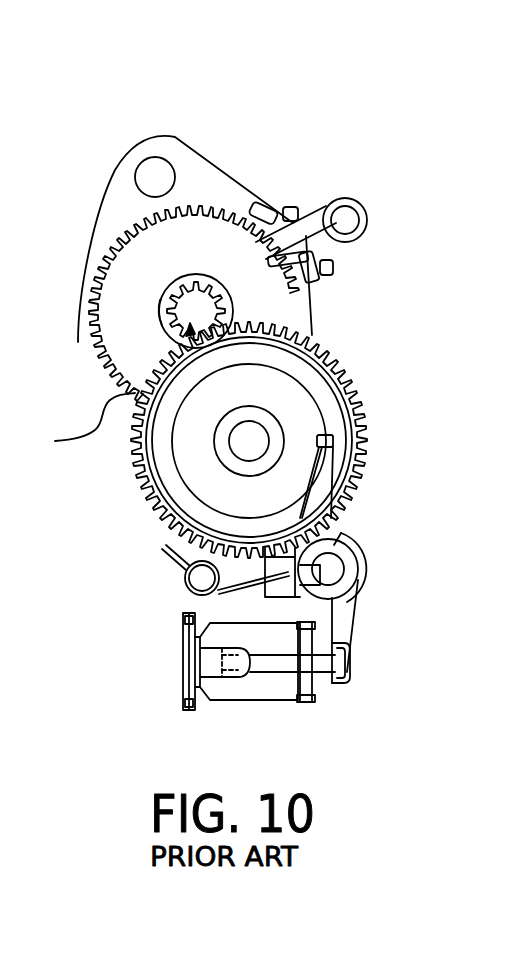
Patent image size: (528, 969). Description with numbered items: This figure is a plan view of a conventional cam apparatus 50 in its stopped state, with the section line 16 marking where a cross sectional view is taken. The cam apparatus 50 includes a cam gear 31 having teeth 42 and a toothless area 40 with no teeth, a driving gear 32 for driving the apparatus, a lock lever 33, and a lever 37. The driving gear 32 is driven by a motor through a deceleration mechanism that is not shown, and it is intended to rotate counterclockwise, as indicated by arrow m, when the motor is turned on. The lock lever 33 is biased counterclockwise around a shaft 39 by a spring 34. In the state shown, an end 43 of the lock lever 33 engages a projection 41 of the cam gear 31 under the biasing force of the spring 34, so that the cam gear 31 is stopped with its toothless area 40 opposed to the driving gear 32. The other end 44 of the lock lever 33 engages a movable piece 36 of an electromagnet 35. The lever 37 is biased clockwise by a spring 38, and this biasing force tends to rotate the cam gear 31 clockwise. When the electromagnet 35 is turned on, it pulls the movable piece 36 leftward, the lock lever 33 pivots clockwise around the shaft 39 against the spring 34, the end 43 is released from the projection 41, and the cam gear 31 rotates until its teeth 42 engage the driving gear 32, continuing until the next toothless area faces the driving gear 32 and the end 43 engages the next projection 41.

The section line 16 is at (388, 662).
The cam gear 31 is at (167, 476).
The driving gear 32 is at (170, 287).
The lock lever 33 is at (360, 560).
The spring 34 is at (186, 586).
The electromagnet 35 is at (252, 700).
The movable piece 36 is at (320, 676).
The lever 37 is at (193, 163).
The spring 38 is at (340, 242).
The shaft 39 is at (333, 576).
The toothless area 40 is at (177, 347).
The projection 41 is at (325, 434).
The teeth 42 is at (78, 424).
The end of lock lever 43 is at (328, 447).
The other end of lock lever 44 is at (350, 673).
The cam apparatus 50 is at (288, 160).
The arrow m is at (160, 305).